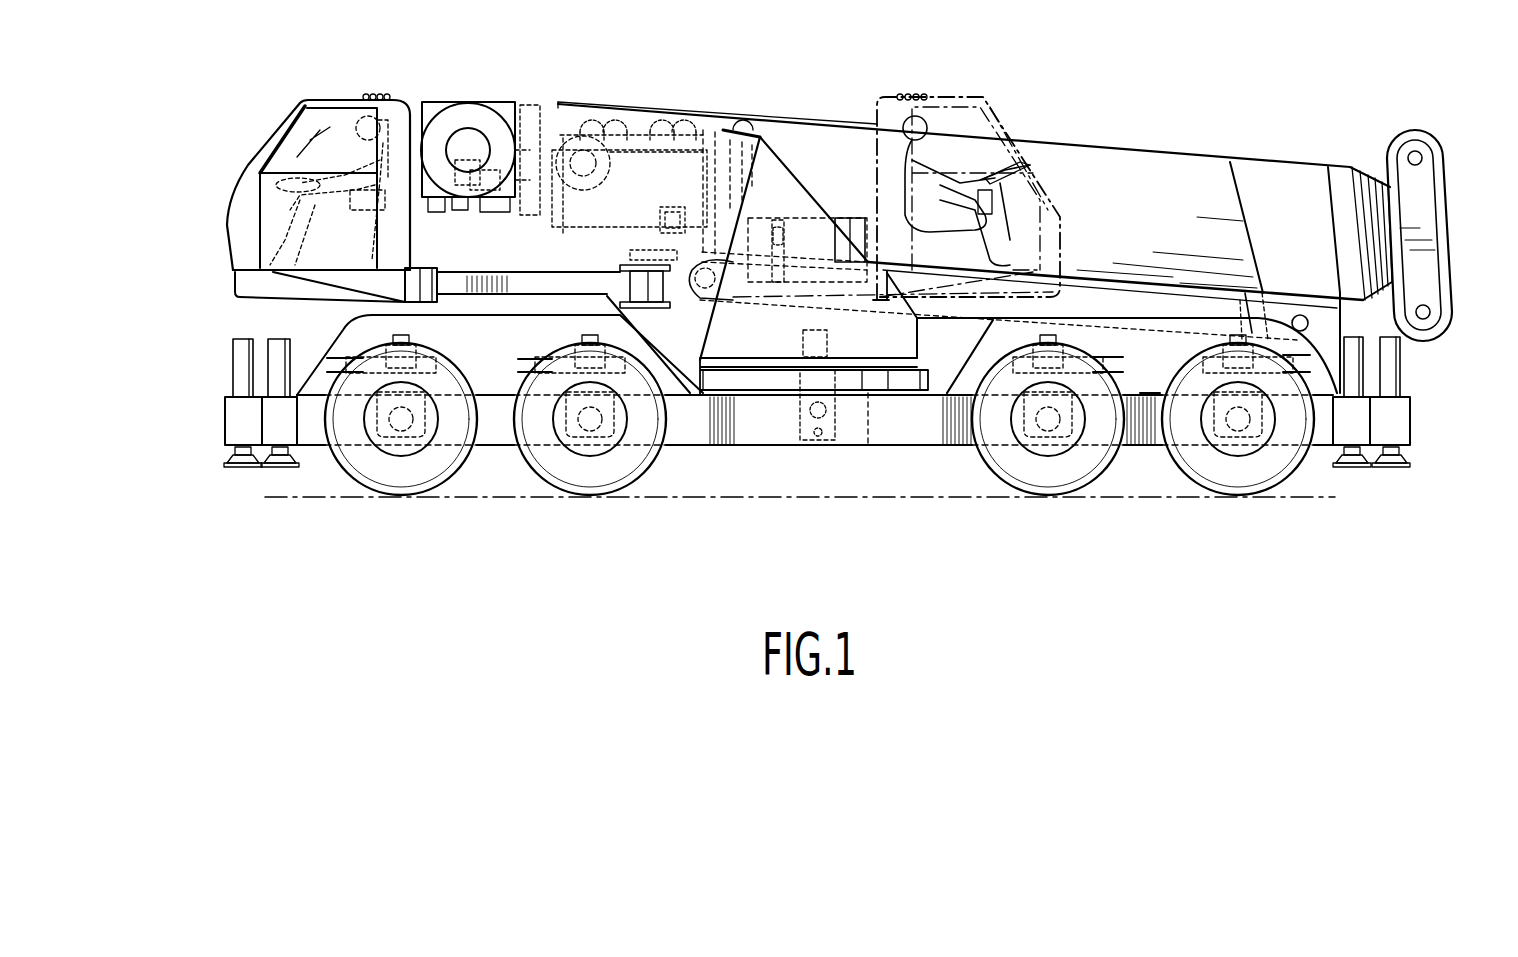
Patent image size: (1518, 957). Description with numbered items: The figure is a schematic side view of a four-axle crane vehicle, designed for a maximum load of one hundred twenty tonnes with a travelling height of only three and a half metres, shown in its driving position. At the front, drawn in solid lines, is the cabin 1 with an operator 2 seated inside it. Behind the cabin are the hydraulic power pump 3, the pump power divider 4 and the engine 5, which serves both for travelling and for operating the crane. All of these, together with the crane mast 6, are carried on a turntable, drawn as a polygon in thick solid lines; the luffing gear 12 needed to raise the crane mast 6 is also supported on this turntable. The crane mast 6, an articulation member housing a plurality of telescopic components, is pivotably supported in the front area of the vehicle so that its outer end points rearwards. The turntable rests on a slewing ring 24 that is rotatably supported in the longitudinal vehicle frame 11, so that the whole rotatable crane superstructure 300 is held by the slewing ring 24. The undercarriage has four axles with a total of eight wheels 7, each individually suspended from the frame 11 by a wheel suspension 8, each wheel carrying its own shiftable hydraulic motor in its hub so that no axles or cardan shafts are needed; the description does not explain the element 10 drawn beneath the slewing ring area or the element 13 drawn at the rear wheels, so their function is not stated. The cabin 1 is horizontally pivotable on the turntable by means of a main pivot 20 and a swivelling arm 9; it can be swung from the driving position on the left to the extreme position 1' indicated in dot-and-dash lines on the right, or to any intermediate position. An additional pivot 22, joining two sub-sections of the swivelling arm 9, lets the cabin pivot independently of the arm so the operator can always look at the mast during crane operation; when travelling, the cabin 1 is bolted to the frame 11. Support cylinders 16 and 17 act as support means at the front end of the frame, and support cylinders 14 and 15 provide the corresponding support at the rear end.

The cabin 1 is at (318, 165).
The operator 2 is at (370, 115).
The hydraulic power pump 3 is at (503, 203).
The pump power divider 4 is at (540, 160).
The engine 5 is at (643, 167).
The crane superstructure 300 is at (774, 177).
The extreme position of the cabin 1' is at (976, 150).
The crane mast 6 is at (1278, 178).
The swivelling arm 9 is at (493, 273).
The additional pivot 22 is at (437, 283).
The wheel suspension 8 is at (363, 385).
The support cylinder 16 is at (235, 430).
The support cylinder 17 is at (278, 463).
The wheel 7 is at (383, 470).
The main pivot 20 is at (653, 307).
The slewing ring 24 is at (785, 380).
The hydraulic cylinder 10 is at (812, 445).
The vehicle frame 11 is at (882, 442).
The luffing gear 12 is at (972, 307).
The rear wheel 13 is at (1083, 447).
The support cylinder 14 is at (1350, 427).
The support cylinder 15 is at (1393, 427).